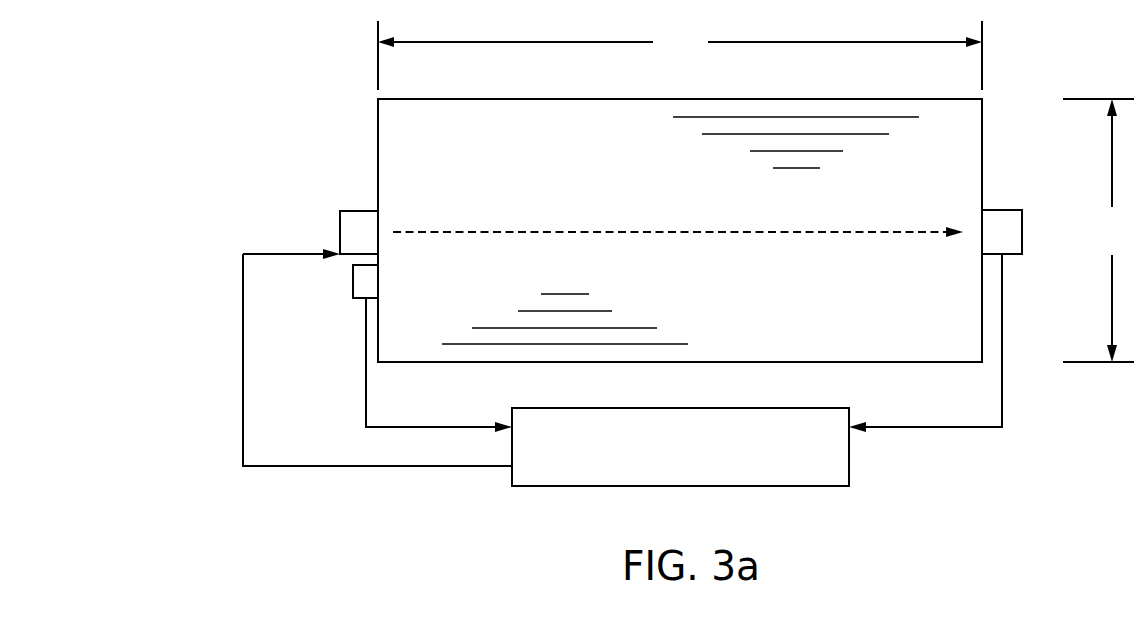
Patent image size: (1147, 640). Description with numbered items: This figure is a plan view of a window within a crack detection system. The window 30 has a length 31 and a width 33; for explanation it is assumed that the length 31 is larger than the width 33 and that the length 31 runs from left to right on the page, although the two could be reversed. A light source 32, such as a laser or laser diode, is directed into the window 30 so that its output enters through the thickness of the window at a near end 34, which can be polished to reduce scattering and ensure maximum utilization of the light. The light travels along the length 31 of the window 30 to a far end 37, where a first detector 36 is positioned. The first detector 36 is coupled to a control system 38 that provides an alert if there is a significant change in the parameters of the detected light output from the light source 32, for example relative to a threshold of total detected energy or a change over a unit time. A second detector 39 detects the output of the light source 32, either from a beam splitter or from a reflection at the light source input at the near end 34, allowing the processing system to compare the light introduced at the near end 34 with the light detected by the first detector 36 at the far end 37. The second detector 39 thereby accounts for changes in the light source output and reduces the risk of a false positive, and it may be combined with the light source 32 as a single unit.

The window 30 is at (678, 216).
The length 31 is at (680, 55).
The light source 32 is at (340, 211).
The width 33 is at (1098, 230).
The near end 34 is at (378, 130).
The first detector 36 is at (1022, 210).
The far end 37 is at (982, 147).
The control system 38 is at (823, 487).
The second detector 39 is at (353, 298).